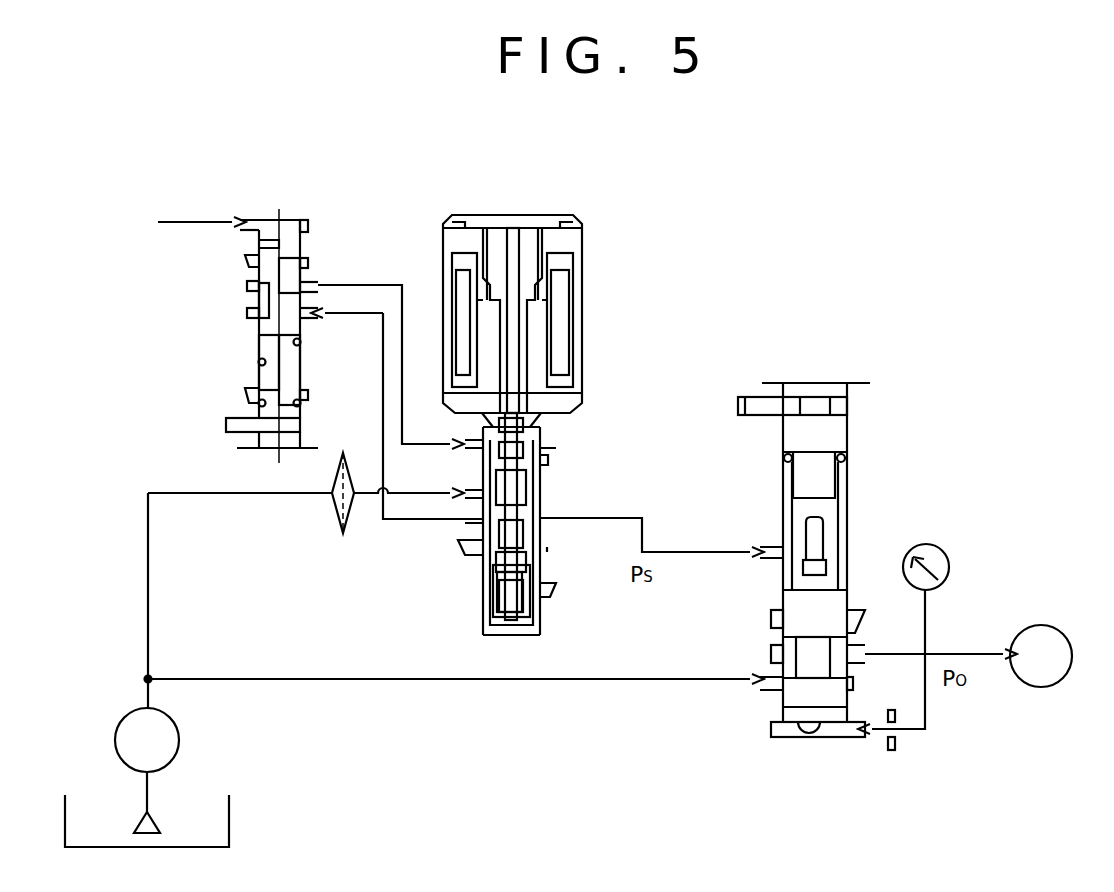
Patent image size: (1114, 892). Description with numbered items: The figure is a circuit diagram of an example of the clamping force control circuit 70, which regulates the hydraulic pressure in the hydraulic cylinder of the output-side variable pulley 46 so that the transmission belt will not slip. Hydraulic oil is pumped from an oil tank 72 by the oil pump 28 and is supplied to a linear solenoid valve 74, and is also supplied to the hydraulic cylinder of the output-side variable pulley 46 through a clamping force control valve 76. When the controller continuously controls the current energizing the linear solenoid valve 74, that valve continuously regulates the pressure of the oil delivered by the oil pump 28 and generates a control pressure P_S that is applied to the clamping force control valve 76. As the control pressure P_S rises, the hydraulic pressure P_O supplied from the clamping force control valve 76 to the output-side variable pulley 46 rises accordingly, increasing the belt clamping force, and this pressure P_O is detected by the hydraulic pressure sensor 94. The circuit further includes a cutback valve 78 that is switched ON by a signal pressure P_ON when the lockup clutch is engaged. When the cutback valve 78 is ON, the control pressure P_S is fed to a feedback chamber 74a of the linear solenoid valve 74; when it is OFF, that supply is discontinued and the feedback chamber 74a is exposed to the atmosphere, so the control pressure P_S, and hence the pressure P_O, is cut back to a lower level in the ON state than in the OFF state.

The cutback valve 78 is at (322, 160).
The linear solenoid valve 74 is at (557, 196).
The feedback chamber 74a is at (525, 442).
The clamping force control circuit 70 is at (770, 476).
The clamping force control valve 76 is at (842, 356).
The hydraulic pressure sensor 94 is at (928, 545).
The output-side variable pulley 46 is at (1042, 626).
The oil pump 28 is at (120, 738).
The oil tank 72 is at (232, 823).